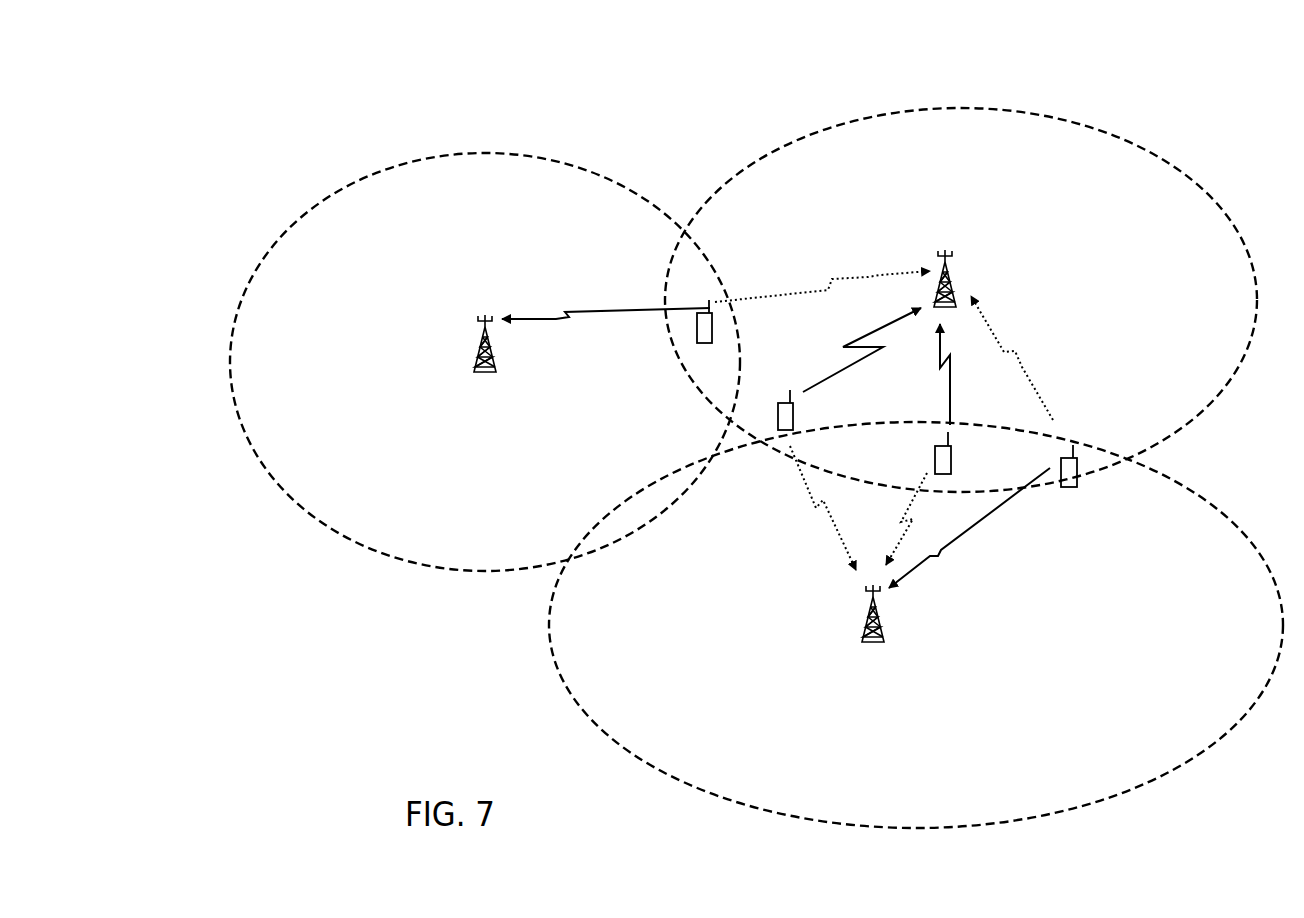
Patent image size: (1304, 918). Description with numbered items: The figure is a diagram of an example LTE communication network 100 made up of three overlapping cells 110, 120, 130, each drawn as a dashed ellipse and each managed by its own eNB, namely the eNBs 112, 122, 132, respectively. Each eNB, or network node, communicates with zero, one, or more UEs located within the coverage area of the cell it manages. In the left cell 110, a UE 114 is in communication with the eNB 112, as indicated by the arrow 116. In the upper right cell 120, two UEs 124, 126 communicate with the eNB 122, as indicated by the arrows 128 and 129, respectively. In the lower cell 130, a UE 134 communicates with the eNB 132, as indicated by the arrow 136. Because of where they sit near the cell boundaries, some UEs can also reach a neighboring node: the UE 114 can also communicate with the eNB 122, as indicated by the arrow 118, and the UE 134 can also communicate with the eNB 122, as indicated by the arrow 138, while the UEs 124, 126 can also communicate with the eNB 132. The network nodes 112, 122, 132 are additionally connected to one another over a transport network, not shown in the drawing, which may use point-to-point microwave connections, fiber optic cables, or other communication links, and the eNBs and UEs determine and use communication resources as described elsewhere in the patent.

The LTE communication network 100 is at (306, 116).
The cell 110 is at (502, 204).
The eNB 112 is at (462, 350).
The UE 114 is at (690, 342).
The arrow 116 is at (607, 302).
The arrow 118 is at (868, 273).
The cell 120 is at (962, 172).
The eNB 122 is at (956, 283).
The UE 124 is at (784, 392).
The UE 126 is at (935, 451).
The arrow 128 is at (832, 372).
The arrow 129 is at (948, 384).
The cell 130 is at (898, 797).
The eNB 132 is at (860, 624).
The UE 134 is at (1070, 490).
The arrow 136 is at (966, 538).
The arrow 138 is at (1010, 338).